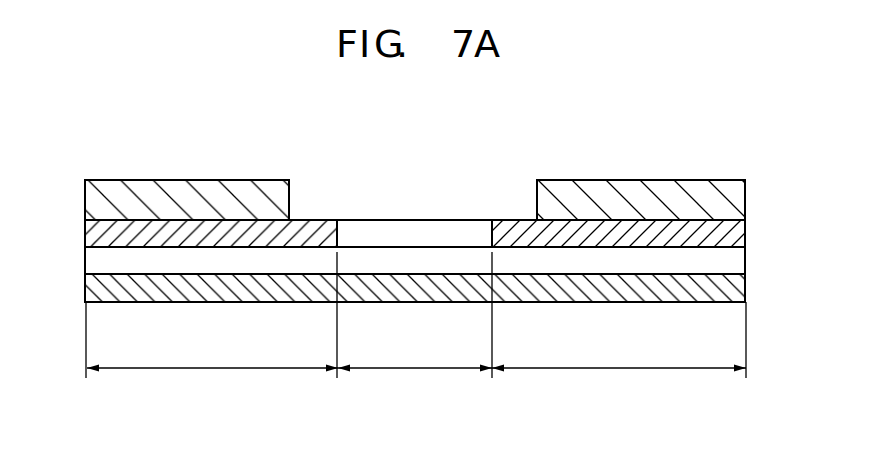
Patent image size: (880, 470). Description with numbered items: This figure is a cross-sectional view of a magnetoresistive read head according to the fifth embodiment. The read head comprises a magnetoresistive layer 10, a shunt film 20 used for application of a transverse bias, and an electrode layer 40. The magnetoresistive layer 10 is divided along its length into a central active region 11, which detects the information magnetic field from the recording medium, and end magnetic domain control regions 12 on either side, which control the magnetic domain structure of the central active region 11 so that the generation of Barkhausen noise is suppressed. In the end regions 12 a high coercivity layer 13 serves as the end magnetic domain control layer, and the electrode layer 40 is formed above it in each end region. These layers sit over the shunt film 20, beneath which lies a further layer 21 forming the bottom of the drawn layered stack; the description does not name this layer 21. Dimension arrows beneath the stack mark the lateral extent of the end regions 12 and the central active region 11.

The electrode layer 40 is at (130, 193).
The high coercivity layer 13 is at (95, 232).
The magnetoresistive layer 10 is at (408, 232).
The shunt film 20 is at (97, 262).
The base layer 21 is at (723, 288).
The end magnetic domain control regions 12 is at (214, 368).
The central active region 11 is at (422, 368).